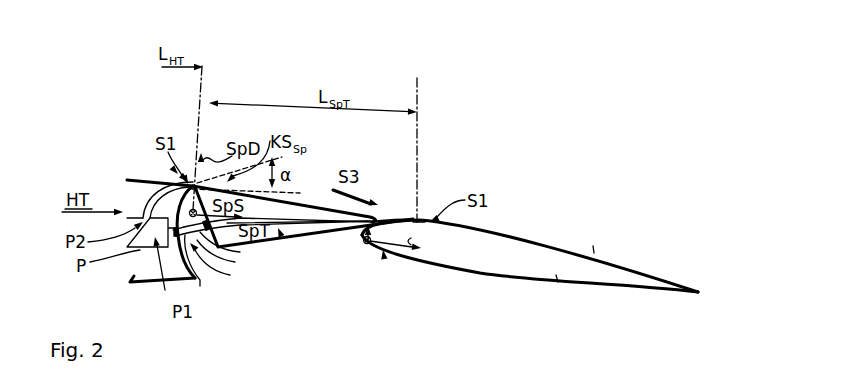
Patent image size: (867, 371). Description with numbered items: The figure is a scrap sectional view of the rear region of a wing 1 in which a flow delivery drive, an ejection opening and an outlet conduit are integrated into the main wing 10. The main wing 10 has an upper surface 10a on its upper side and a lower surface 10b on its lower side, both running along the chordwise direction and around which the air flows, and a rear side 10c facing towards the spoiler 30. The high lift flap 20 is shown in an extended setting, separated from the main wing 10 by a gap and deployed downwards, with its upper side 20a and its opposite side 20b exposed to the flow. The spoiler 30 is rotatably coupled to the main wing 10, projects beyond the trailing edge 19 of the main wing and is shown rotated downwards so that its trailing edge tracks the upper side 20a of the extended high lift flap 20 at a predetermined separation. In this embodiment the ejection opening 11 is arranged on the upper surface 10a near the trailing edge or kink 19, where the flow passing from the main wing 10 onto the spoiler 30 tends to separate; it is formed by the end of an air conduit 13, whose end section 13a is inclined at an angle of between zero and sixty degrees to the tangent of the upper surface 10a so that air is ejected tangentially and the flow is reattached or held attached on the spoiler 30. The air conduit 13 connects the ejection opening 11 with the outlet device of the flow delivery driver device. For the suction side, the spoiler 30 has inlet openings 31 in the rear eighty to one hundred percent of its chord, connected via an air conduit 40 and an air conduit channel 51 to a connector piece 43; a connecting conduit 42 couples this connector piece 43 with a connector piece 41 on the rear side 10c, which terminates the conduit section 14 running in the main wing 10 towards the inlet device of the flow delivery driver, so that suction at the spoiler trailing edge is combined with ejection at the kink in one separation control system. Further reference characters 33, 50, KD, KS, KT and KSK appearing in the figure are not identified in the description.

The high-lift system / wing assembly 1 is at (475, 160).
The main wing 10 is at (138, 278).
The upper surface 10a is at (144, 179).
The lower surface 10b is at (135, 284).
The rear side 10c is at (204, 273).
The ejection opening 11 is at (170, 165).
The air conduit 13 is at (147, 197).
The end section 13a is at (180, 172).
The conduit section 14 is at (177, 236).
The trailing edge of the main wing 19 is at (198, 160).
The high lift flap 20 is at (603, 278).
The upper side of the high lift flap 20a is at (593, 250).
The main wing lower surface 20b is at (557, 278).
The spoiler 30 is at (312, 200).
The inlet opening 31 is at (380, 218).
The spoiler rear end 33 is at (418, 222).
The air conduit 40 is at (208, 265).
The connector piece 41 is at (200, 286).
The connecting conduit 42 is at (215, 250).
The connector piece 43 is at (228, 246).
The spoiler body 50 is at (282, 235).
The air conduit channel 51 is at (313, 220).
The wing leading edge point KD is at (364, 240).
The wing chord KS is at (367, 243).
The wing chord direction KT is at (406, 241).
The wing lower contour KSK is at (385, 257).